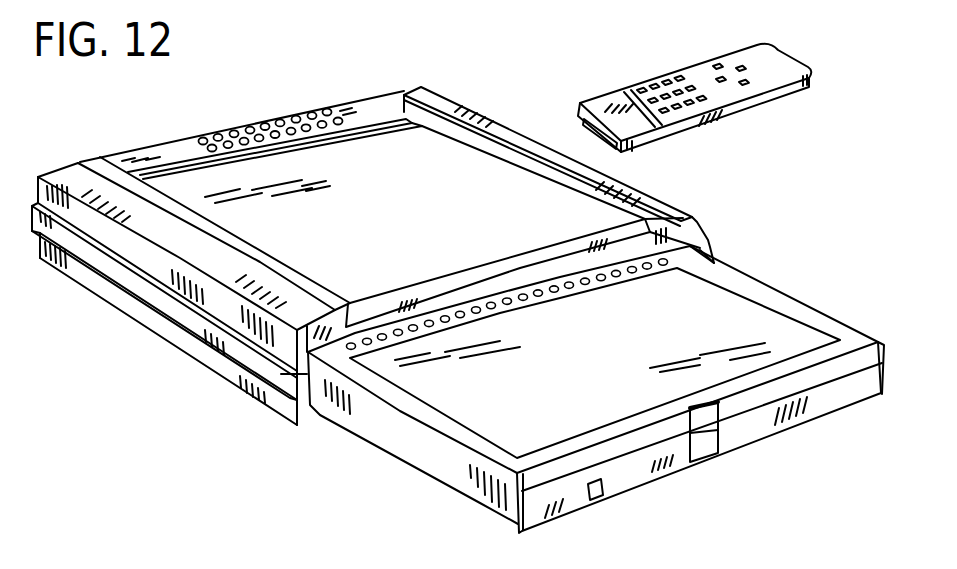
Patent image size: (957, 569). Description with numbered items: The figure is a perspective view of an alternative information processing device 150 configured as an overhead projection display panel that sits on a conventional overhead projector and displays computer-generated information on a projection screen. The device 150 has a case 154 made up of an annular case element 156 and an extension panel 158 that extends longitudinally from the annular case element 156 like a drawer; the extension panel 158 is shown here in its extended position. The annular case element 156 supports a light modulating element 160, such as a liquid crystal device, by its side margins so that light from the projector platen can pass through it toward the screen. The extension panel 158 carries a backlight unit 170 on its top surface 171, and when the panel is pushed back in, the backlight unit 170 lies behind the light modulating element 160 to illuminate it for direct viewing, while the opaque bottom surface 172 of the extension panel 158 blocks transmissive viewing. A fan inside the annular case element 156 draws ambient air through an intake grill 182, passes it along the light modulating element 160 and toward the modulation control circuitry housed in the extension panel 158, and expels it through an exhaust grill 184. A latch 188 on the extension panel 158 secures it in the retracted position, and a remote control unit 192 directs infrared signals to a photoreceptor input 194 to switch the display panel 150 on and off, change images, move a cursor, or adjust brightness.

The information processing device 150 is at (153, 132).
The case 154 is at (457, 101).
The annular case element 156 is at (495, 128).
The extension panel 158 is at (462, 478).
The light modulating element 160 is at (410, 216).
The backlight unit 170 is at (607, 370).
The top surface 171 is at (815, 322).
The bottom surface 172 is at (377, 448).
The intake grill 182 is at (317, 107).
The exhaust grill 184 is at (628, 272).
The latch 188 is at (723, 440).
The remote control unit 192 is at (687, 75).
The photoreceptor input 194 is at (604, 488).